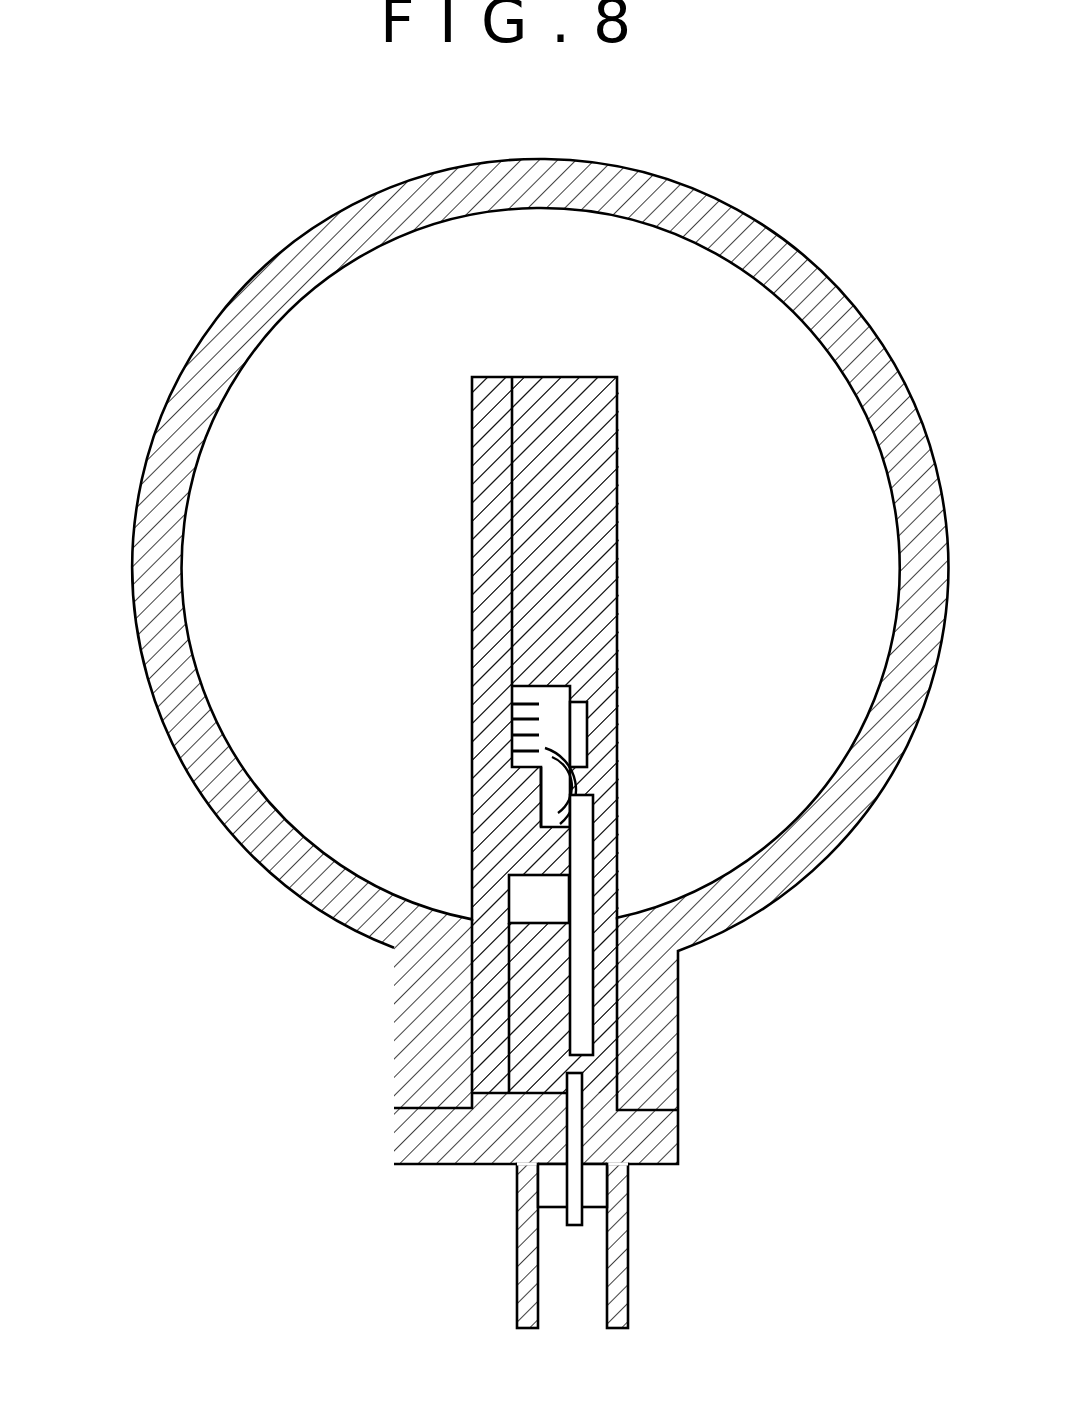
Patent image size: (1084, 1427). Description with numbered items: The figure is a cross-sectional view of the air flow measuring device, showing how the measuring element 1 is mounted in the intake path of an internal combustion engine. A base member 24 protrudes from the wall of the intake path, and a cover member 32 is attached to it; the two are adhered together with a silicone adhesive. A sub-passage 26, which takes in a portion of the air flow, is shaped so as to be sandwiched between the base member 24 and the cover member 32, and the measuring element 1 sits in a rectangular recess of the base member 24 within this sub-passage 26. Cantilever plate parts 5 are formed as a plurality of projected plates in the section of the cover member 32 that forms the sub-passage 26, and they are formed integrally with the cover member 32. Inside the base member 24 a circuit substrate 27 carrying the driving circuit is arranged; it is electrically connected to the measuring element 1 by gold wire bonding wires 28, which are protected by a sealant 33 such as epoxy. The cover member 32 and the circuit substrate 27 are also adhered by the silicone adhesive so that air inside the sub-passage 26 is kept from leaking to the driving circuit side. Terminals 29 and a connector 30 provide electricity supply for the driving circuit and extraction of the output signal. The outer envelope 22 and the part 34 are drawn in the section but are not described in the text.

The glass bulb 22 is at (155, 530).
The cover member 32 is at (495, 520).
The base member 24 is at (578, 520).
The sub-passage 26 is at (557, 707).
The cantilever plate parts 5 is at (530, 733).
The measuring element 1 is at (577, 737).
The gold wire bonding wires 28 is at (567, 781).
The sealant 33 is at (538, 797).
The cavity 34 is at (556, 847).
The circuit substrate 27 is at (580, 982).
The terminals 29 is at (577, 1132).
The connector 30 is at (520, 1250).